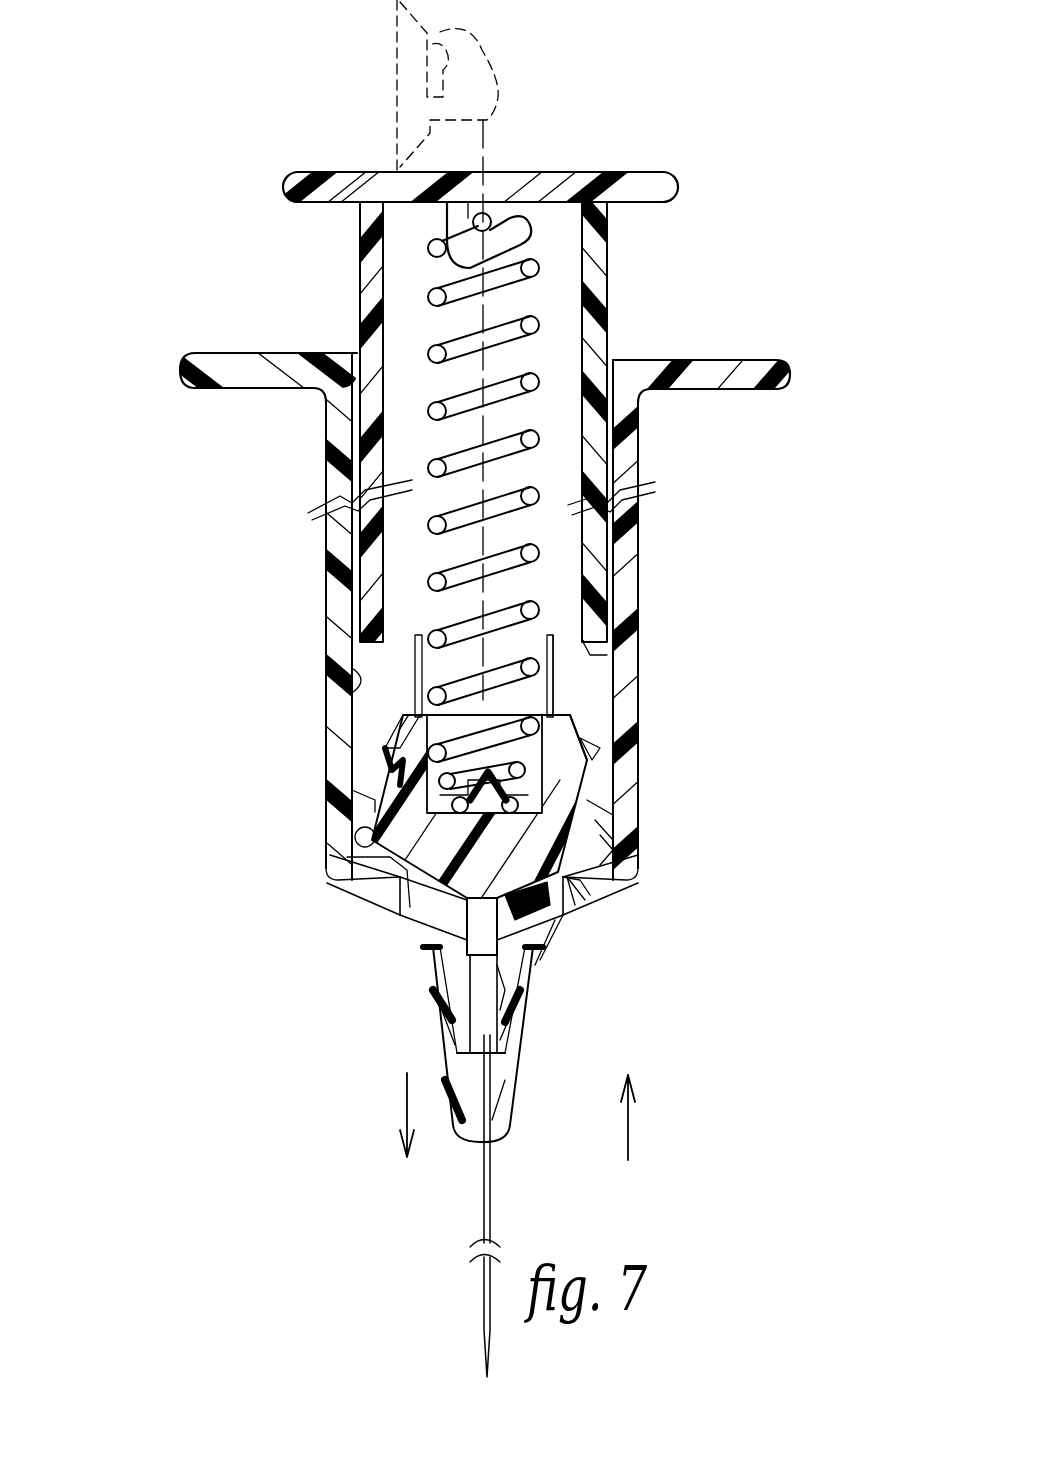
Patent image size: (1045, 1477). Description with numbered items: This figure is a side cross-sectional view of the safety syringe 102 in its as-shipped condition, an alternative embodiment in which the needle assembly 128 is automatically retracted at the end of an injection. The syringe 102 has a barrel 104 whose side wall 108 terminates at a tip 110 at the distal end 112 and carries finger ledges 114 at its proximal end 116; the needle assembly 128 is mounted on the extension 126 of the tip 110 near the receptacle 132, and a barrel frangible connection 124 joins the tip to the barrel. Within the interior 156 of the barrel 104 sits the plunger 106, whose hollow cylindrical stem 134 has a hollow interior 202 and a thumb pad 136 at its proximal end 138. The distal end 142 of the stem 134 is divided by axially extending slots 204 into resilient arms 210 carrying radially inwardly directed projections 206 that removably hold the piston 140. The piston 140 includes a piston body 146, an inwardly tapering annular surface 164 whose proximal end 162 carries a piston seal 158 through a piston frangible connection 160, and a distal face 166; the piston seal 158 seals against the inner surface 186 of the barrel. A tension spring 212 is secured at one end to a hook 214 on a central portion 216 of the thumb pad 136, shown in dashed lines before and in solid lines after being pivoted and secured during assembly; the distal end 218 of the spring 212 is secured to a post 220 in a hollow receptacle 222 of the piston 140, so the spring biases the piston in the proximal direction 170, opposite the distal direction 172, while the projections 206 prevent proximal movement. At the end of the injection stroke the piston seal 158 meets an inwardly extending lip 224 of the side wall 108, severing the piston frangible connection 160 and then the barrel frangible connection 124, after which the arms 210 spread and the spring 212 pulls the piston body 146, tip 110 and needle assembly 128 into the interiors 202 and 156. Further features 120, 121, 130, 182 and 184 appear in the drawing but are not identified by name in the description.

The safety syringe 102 is at (762, 150).
The barrel 104 is at (652, 565).
The plunger 106 is at (605, 315).
The side wall 108 is at (640, 515).
The tip 110 is at (417, 920).
The distal end of side wall 112 is at (637, 837).
The finger ledges 114 is at (790, 372).
The proximal end of side wall 116 is at (640, 428).
The passage 120 is at (563, 882).
The shoulder 121 is at (567, 880).
The barrel frangible connection 124 is at (397, 875).
The extension 126 is at (510, 977).
The needle assembly 128 is at (510, 1112).
The hub shoulder 130 is at (485, 1030).
The receptacle 132 is at (482, 965).
The stem 134 is at (605, 265).
The thumb pad 136 is at (585, 170).
The proximal end of stem 138 is at (360, 245).
The piston 140 is at (587, 802).
The distal end of stem 142 is at (577, 757).
The piston body 146 is at (380, 807).
The barrel interior 156 is at (603, 663).
The piston seal 158 is at (555, 870).
The piston frangible connection 160 is at (603, 833).
The proximal end of tapering annular surface 162 is at (403, 847).
The inwardly tapering annular surface 164 is at (400, 870).
The distal face of piston 166 is at (437, 882).
The proximal direction 170 is at (630, 1118).
The distal direction 172 is at (405, 1105).
The longitudinal axis 182 is at (483, 372).
The needle 184 is at (490, 1195).
The inner surface 186 is at (357, 677).
The hollow interior of stem 202 is at (466, 510).
The axially extending slots 204 is at (418, 660).
The radially inwardly directed projections 206 is at (523, 767).
The arms 210 is at (565, 655).
The tension spring 212 is at (437, 295).
The hook 214 is at (498, 240).
The central portion of thumb pad 216 is at (395, 83).
The distal end of spring 218 is at (383, 787).
The post 220 is at (617, 747).
The hollow receptacle 222 is at (437, 733).
The inwardly extending lip 224 is at (570, 880).